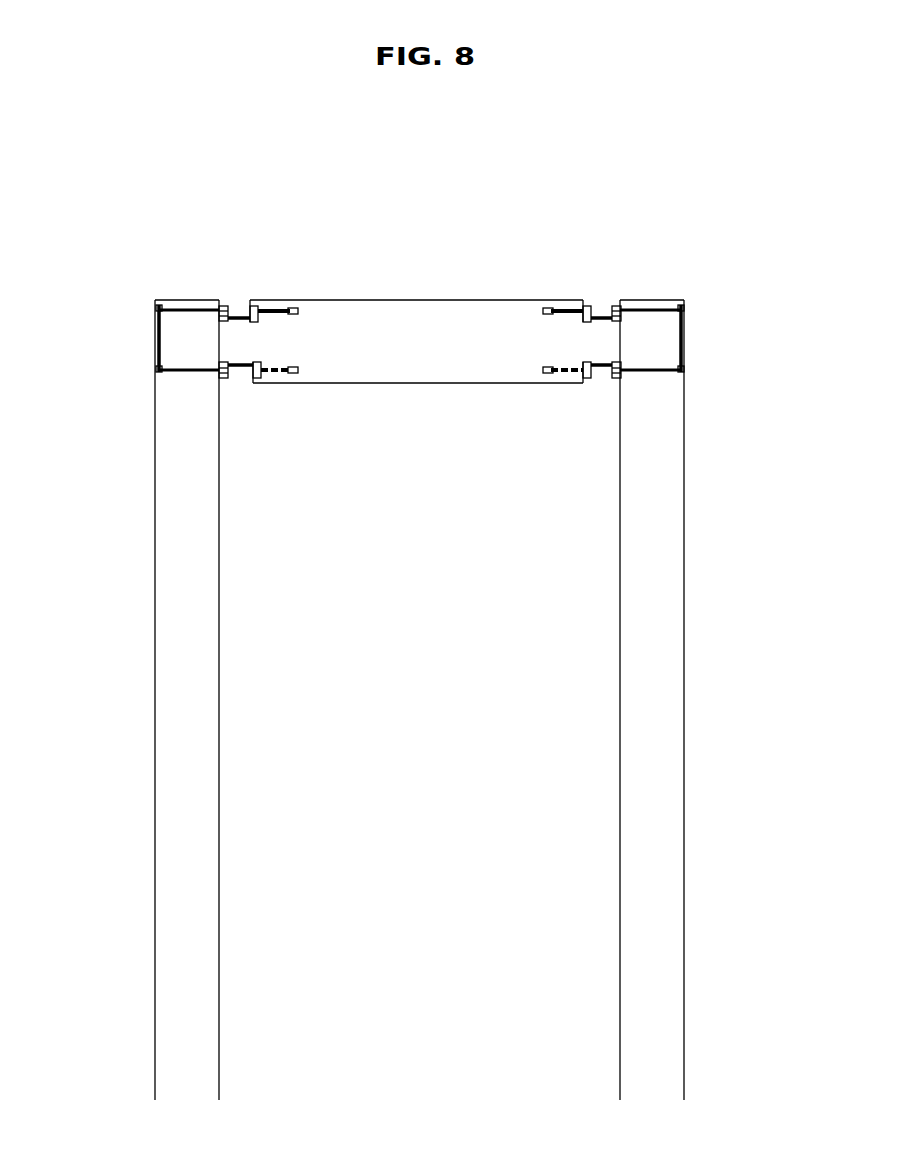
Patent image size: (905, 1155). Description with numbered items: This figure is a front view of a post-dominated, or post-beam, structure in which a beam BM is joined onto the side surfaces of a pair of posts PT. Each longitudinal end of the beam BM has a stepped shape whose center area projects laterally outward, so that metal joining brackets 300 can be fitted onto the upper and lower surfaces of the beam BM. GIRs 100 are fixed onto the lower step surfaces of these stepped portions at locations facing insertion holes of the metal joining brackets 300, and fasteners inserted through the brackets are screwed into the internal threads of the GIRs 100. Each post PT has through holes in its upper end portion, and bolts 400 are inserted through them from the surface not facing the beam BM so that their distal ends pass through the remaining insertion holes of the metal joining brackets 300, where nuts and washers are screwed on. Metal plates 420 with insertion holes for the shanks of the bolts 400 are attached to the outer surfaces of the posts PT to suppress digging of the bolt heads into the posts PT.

The GIR 100 is at (271, 300).
The metal joining bracket 300 is at (241, 301).
The bolt 400 is at (185, 310).
The metal plate 420 is at (158, 340).
The beam BM is at (408, 300).
The post PT is at (160, 748).